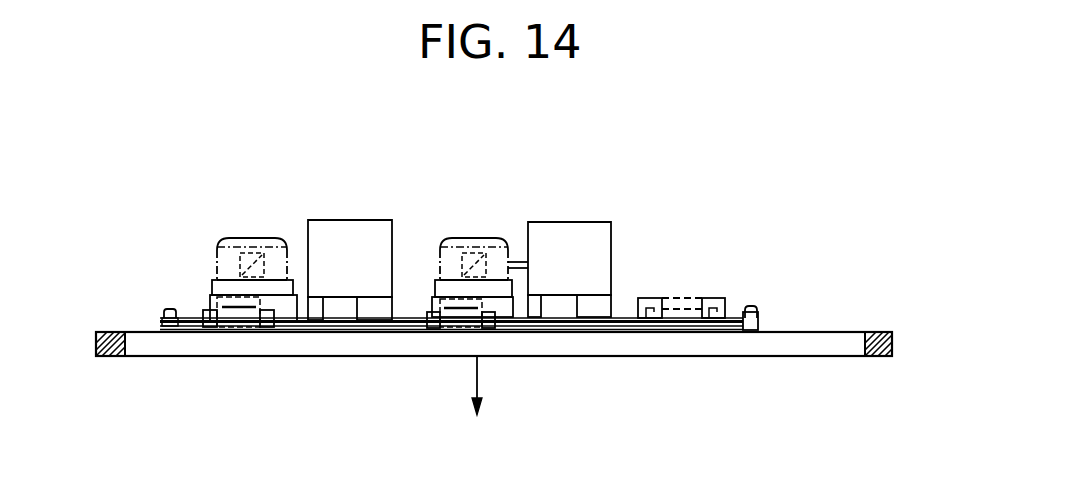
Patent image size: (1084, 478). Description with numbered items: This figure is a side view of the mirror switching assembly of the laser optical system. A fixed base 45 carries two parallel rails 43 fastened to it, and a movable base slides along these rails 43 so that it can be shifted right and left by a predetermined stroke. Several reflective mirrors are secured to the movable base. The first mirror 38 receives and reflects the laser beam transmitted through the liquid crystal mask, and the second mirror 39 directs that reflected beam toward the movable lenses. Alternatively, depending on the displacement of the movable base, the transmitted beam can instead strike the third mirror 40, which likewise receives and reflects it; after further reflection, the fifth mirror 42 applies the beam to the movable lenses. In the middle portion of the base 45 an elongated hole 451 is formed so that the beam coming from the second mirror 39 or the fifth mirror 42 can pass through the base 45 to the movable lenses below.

The first mirror 38 is at (597, 237).
The second mirror 39 is at (490, 258).
The third mirror 40 is at (366, 226).
The fifth mirror 42 is at (252, 256).
The rails 43 is at (585, 330).
The base 45 is at (113, 331).
The elongated hole 451 is at (820, 333).